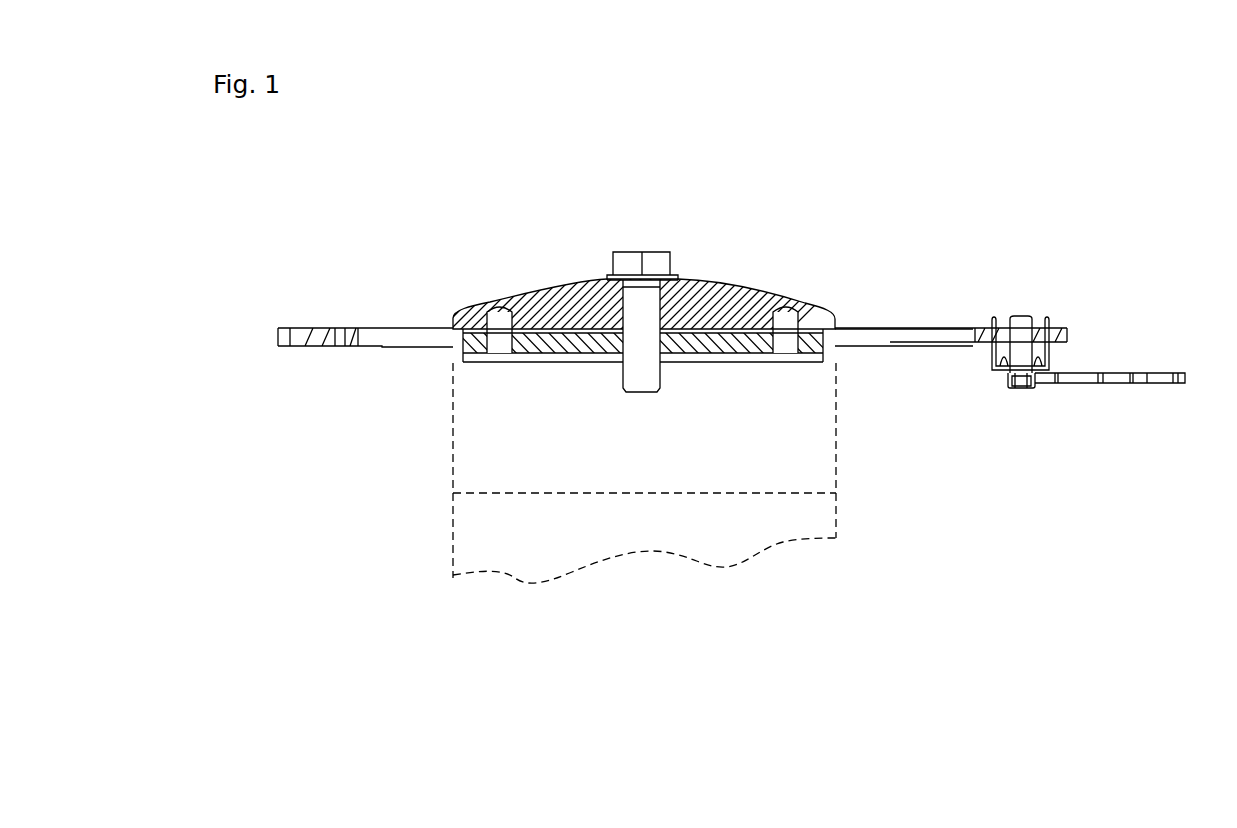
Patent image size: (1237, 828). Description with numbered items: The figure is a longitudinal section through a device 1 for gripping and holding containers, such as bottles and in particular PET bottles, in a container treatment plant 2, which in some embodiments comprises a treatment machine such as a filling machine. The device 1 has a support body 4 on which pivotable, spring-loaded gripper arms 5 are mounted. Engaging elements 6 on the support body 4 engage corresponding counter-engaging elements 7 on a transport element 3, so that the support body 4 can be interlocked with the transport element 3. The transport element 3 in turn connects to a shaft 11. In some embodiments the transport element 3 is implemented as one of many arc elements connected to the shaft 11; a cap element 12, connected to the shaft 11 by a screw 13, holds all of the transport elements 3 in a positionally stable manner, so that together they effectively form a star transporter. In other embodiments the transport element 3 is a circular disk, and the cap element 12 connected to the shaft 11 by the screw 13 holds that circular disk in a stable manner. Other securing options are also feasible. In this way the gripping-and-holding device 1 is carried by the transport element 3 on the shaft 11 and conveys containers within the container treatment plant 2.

The device 1 is at (978, 248).
The container treatment plant 2 is at (390, 475).
The transport element 3 is at (882, 326).
The support body 4 is at (1003, 387).
The gripper arms 5 is at (1138, 389).
The engaging elements 6 is at (1052, 306).
The counter-engaging elements 7 is at (1052, 306).
The shaft 11 is at (537, 473).
The cap element 12 is at (570, 310).
The screw 13 is at (645, 252).